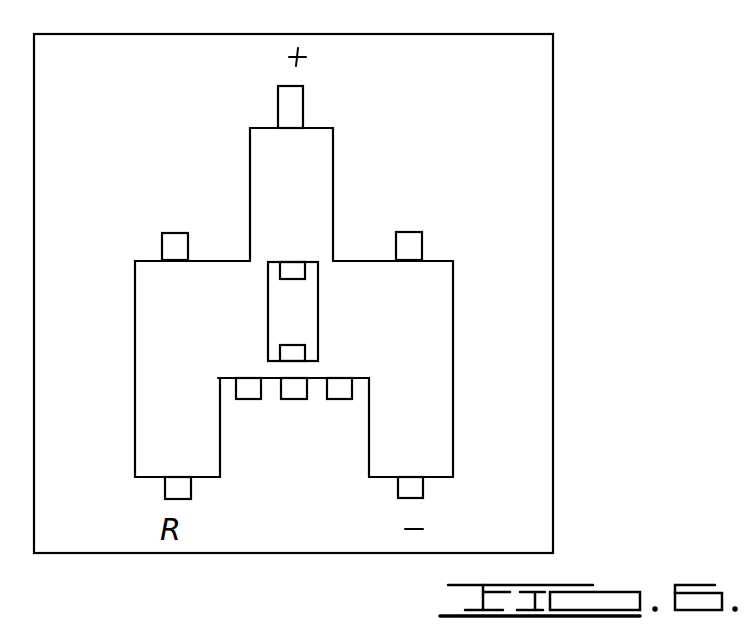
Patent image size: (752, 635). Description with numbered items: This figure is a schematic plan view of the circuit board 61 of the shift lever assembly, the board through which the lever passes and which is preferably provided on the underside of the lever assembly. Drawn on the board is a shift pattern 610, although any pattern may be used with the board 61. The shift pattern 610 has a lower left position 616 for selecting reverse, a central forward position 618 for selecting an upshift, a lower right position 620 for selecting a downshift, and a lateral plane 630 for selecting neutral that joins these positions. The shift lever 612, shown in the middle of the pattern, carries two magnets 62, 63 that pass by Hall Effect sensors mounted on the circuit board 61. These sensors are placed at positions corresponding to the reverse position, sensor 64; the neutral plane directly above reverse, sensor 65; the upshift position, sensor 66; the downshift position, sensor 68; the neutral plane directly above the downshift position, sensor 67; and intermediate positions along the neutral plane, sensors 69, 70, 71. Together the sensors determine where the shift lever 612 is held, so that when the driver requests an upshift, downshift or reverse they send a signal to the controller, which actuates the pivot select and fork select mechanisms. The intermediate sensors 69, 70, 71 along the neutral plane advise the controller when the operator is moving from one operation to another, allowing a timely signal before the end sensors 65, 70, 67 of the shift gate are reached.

The circuit board 61 is at (530, 302).
The shift pattern 610 is at (294, 287).
The central forward position 618 is at (250, 133).
The lateral plane 630 is at (163, 295).
The lower left position 616 is at (135, 466).
The lower right position 620 is at (453, 462).
The Hall Effect sensor at upshift position 66 is at (303, 93).
The Hall Effect sensor at neutral plane above reverse 65 is at (173, 232).
The Hall Effect sensor at neutral plane above downshift 67 is at (406, 232).
The shift lever 612 is at (342, 311).
The magnet 62 is at (298, 270).
The magnet 63 is at (300, 352).
The intermediate neutral plane sensor 69 is at (249, 393).
The intermediate neutral plane sensor 70 is at (295, 393).
The intermediate neutral plane sensor 71 is at (338, 393).
The Hall Effect sensor at reverse position 64 is at (165, 492).
The Hall Effect sensor at downshift position 68 is at (400, 487).